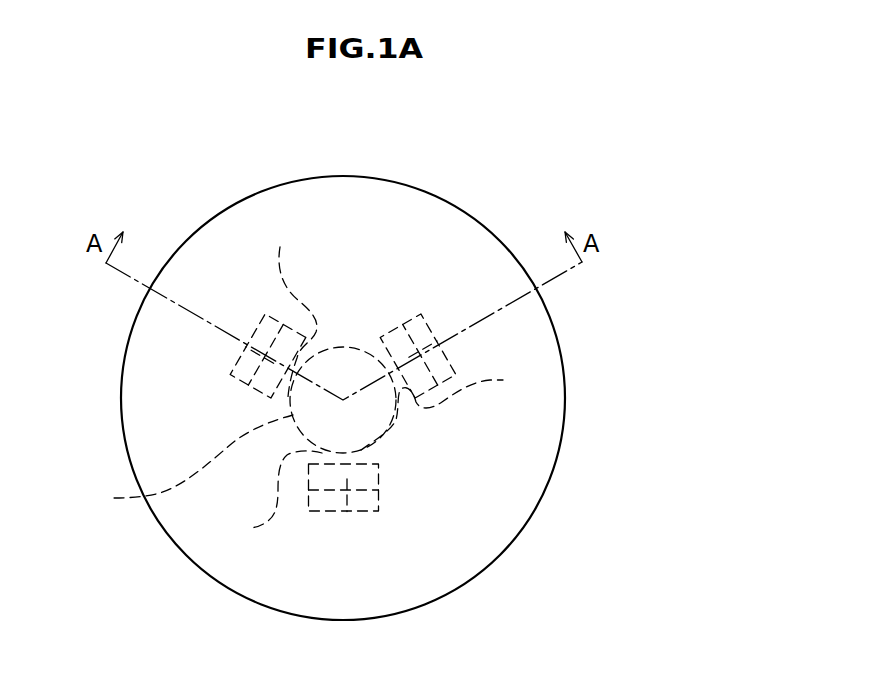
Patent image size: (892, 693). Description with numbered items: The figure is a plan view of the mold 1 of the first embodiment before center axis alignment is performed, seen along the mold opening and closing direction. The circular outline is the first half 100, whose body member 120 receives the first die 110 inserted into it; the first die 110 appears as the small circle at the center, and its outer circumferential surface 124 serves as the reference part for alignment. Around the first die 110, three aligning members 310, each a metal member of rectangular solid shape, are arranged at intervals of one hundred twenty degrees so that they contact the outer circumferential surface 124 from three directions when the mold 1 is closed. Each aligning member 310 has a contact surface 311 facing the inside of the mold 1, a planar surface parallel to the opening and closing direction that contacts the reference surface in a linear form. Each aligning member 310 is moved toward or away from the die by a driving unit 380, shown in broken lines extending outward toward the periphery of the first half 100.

The mold 1 is at (568, 187).
The first half 100 is at (152, 518).
The first die 110 is at (377, 423).
The body member 120 is at (234, 228).
The outer circumferential surface 124 is at (185, 464).
The aligning member 310 is at (352, 511).
The contact surface 311 is at (377, 384).
The driving unit 380 is at (327, 511).